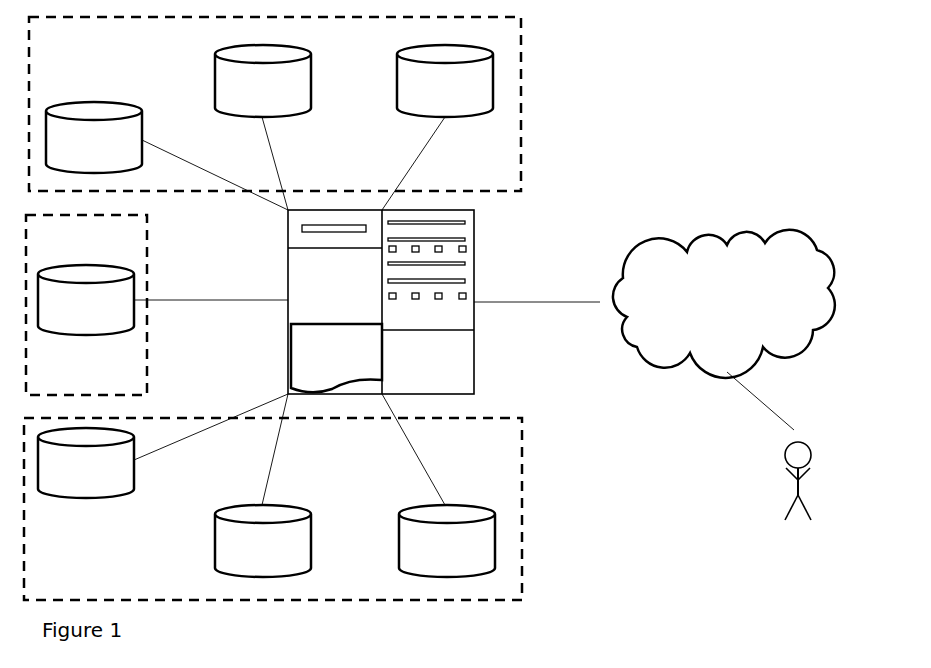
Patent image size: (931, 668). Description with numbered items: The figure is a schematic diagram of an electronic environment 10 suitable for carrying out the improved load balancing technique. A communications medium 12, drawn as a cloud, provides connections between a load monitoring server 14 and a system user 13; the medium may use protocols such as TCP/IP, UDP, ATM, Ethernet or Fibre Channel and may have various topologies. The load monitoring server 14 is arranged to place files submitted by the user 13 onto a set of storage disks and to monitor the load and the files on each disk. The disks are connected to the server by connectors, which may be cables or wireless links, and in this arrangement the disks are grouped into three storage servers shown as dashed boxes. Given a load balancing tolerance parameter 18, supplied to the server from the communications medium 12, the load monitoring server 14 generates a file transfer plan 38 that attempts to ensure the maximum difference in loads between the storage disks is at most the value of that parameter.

The electronic environment 10 is at (655, 85).
The communications medium 12 is at (688, 310).
The system user 13 is at (795, 540).
The load monitoring server 14 is at (320, 318).
The load balancing tolerance parameter 18 is at (500, 288).
The file transfer plan 38 is at (290, 361).